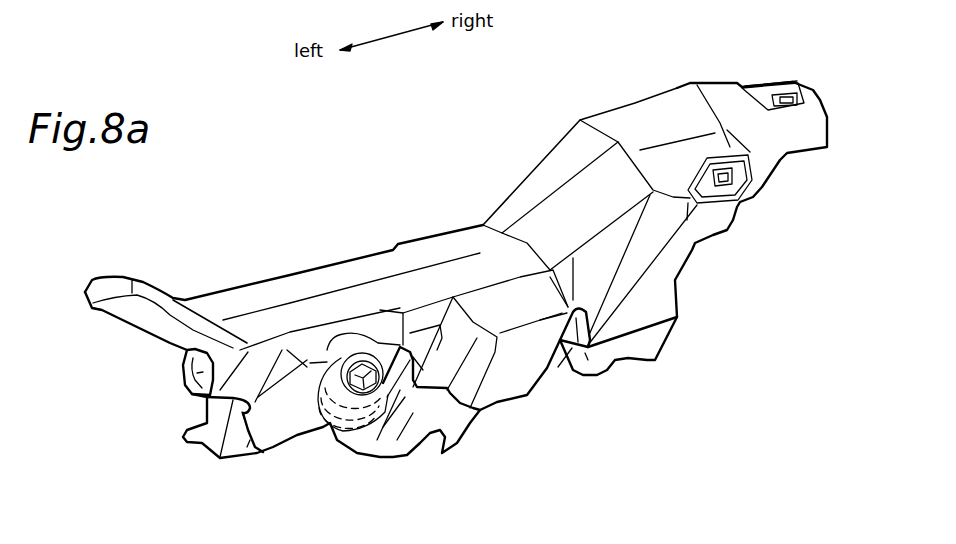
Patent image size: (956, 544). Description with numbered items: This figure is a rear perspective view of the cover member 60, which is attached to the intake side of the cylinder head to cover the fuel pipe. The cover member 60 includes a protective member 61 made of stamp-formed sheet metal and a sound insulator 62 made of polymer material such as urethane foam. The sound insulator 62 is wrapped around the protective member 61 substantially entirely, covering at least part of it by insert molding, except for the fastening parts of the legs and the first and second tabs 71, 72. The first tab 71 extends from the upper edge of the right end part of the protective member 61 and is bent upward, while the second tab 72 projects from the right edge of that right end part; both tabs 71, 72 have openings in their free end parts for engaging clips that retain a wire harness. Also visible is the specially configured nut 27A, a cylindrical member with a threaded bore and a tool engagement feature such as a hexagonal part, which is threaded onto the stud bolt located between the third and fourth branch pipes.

The cover member 60 is at (518, 153).
The sound insulator 62 is at (307, 280).
The nut 27A is at (337, 429).
The protective member 61 is at (758, 90).
The second tab 72 is at (807, 85).
The first tab 71 is at (718, 190).